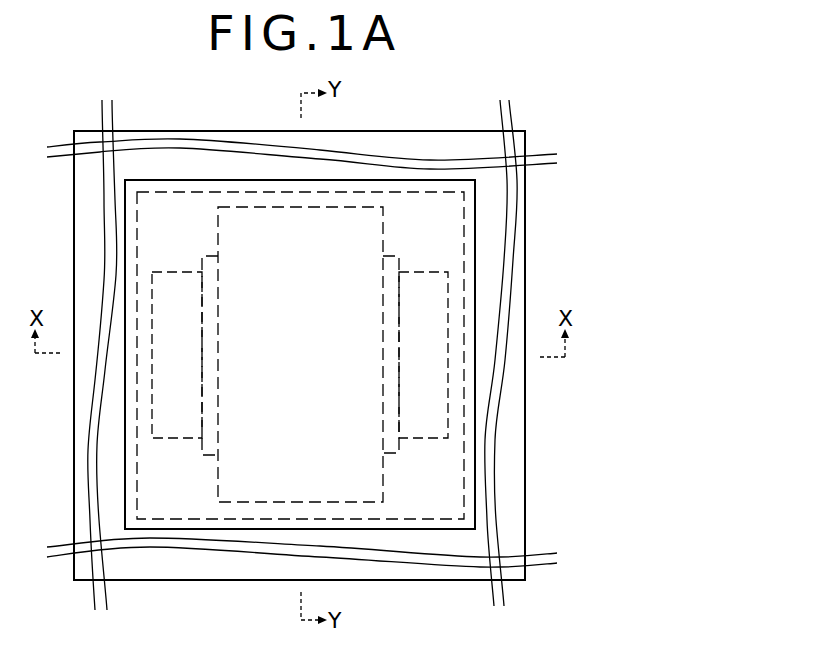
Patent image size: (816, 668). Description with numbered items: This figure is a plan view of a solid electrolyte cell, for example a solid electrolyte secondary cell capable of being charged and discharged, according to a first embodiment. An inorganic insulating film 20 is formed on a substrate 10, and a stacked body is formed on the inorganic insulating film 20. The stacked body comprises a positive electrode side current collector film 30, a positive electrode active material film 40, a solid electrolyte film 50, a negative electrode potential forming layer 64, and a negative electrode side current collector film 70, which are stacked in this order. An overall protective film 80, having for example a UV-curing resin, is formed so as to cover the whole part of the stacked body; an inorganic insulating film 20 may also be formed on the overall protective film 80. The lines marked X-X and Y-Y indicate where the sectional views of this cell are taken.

The substrate 10 is at (520, 140).
The inorganic insulating film 20 is at (447, 237).
The overall protective film 80 is at (471, 202).
The negative electrode side current collector film 70 is at (360, 478).
The positive electrode active material film 40 is at (436, 355).
The solid electrolyte film 50 is at (300, 355).
The negative electrode potential forming layer 64 is at (393, 418).
The positive electrode side current collector film 30 is at (437, 302).